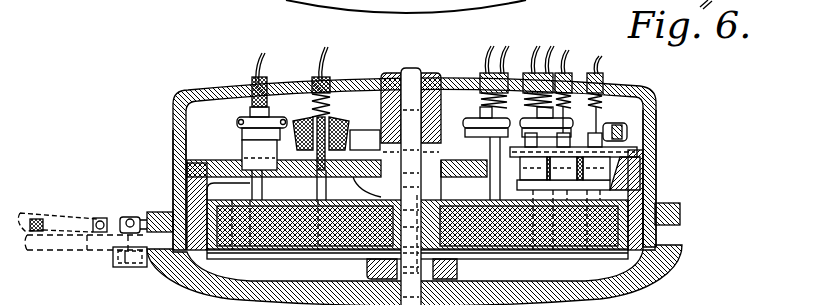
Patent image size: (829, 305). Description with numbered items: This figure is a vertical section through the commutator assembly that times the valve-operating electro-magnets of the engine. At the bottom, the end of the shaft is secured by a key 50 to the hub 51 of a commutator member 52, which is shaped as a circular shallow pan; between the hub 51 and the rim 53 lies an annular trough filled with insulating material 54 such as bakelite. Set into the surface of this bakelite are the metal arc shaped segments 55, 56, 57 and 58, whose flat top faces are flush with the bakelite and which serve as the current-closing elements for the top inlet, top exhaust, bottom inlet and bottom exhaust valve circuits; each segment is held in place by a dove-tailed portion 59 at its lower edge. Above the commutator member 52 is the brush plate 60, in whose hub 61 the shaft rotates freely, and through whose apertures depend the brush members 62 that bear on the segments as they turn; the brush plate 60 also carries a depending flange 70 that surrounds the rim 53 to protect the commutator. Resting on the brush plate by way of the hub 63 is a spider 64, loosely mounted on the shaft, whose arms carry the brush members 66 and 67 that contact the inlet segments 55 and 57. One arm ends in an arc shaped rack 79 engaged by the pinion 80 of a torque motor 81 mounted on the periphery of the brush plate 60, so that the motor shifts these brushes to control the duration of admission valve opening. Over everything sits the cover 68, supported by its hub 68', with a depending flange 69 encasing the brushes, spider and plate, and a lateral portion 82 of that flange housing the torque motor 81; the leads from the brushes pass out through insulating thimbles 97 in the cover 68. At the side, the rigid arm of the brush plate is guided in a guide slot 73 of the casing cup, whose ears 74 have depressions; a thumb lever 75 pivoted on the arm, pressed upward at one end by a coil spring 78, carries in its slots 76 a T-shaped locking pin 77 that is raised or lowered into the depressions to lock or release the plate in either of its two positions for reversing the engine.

The key 50 is at (490, 206).
The hub 51 is at (367, 267).
The commutator member 52 is at (290, 204).
The rim 53 is at (187, 197).
The insulating material 54 is at (276, 185).
The arc shaped segment 55 is at (318, 202).
The arc shaped segment 56 is at (533, 205).
The arc shaped segment 57 is at (587, 205).
The arc shaped segment 58 is at (232, 204).
The dove-tailed portion 59 is at (553, 205).
The brush plate 60 is at (364, 186).
The hub 61 is at (444, 188).
The brush member 62 is at (656, 170).
The hub 63 is at (472, 119).
The spider 64 is at (366, 140).
The brush member 66 is at (333, 119).
The brush member 67 is at (237, 126).
The cover 68 is at (414, 155).
The hub 68' is at (419, 99).
The depending flange 69 is at (173, 137).
The depending flange 70 is at (660, 277).
The guide slot 73 is at (668, 246).
The ear 74 is at (113, 252).
The thumb lever 75 is at (643, 300).
The slot 76 is at (133, 217).
The locking pin 77 is at (132, 253).
The coil spring 78 is at (40, 221).
The arc shaped rack 79 is at (125, 264).
The pinion 80 is at (650, 120).
The torque motor 81 is at (647, 148).
The lateral portion 82 is at (627, 133).
The insulating thimble 97 is at (317, 81).